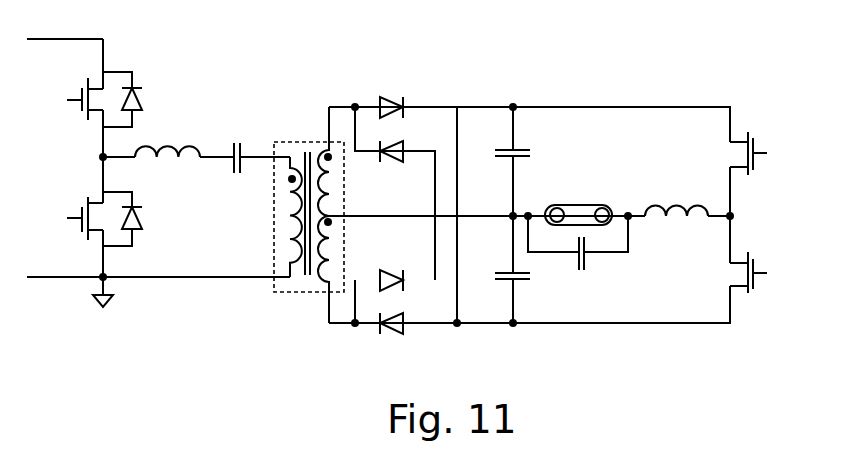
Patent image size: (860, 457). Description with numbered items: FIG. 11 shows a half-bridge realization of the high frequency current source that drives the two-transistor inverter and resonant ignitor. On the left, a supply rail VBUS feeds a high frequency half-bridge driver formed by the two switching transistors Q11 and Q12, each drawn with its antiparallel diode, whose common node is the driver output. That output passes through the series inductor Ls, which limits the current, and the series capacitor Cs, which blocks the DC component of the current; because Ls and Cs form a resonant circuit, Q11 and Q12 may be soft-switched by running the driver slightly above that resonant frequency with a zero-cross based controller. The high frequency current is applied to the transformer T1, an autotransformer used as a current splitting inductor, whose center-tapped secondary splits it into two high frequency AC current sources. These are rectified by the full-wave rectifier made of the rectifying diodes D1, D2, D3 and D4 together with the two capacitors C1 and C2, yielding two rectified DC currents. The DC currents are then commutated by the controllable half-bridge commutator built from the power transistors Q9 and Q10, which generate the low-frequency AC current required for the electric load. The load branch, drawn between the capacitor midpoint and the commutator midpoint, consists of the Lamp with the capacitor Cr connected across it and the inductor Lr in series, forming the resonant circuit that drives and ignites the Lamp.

The DC bus voltage VBUS is at (67, 19).
The high frequency half-bridge driver transistor Q11 is at (84, 89).
The high frequency half-bridge driver transistor Q12 is at (83, 208).
The current limiting inductor Ls is at (167, 130).
The DC blocking capacitor Cs is at (243, 138).
The autotransformer T1 is at (309, 213).
The rectifying diode D1 is at (375, 92).
The rectifying diode D2 is at (399, 175).
The rectifying diode D3 is at (399, 262).
The rectifying diode D4 is at (397, 345).
The rectifier capacitor C1 is at (496, 161).
The rectifier capacitor C2 is at (496, 269).
The fluorescent lamp Lamp is at (576, 197).
The resonant capacitor across lamp Cr is at (578, 253).
The resonant inductor Lr is at (676, 188).
The power transistor Q9 is at (772, 153).
The power transistor Q10 is at (777, 272).